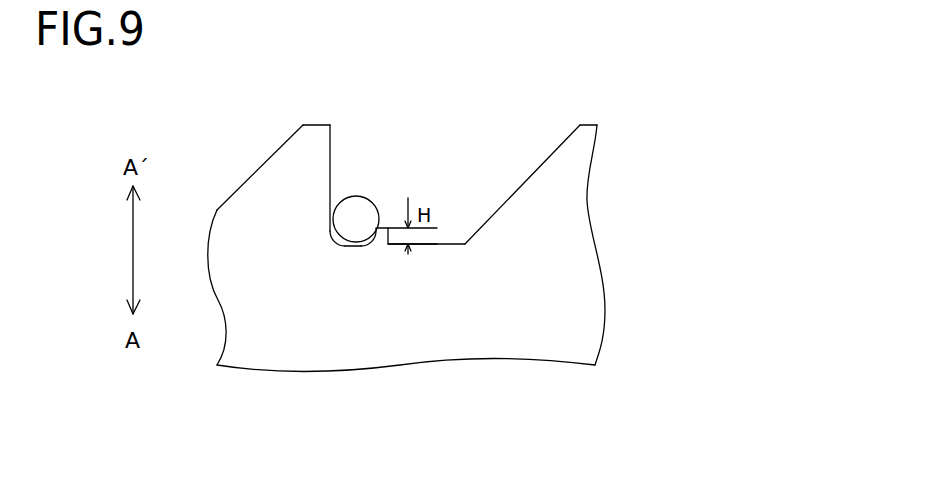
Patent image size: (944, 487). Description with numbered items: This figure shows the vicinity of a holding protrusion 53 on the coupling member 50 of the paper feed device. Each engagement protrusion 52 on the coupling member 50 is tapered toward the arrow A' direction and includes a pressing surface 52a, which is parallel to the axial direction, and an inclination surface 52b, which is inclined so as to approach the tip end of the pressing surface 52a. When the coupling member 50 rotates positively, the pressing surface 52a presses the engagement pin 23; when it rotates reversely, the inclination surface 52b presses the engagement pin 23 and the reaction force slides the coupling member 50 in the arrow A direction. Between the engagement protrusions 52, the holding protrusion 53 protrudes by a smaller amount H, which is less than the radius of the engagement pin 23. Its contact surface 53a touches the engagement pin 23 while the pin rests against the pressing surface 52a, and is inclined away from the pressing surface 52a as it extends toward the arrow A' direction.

The coupling member 50 is at (570, 271).
The engagement protrusion 52 is at (318, 150).
The pressing surface 52a is at (332, 158).
The inclination surface 52b is at (263, 163).
The holding protrusion 53 is at (382, 237).
The contact surface 53a is at (366, 236).
The engagement pin 23 is at (357, 213).